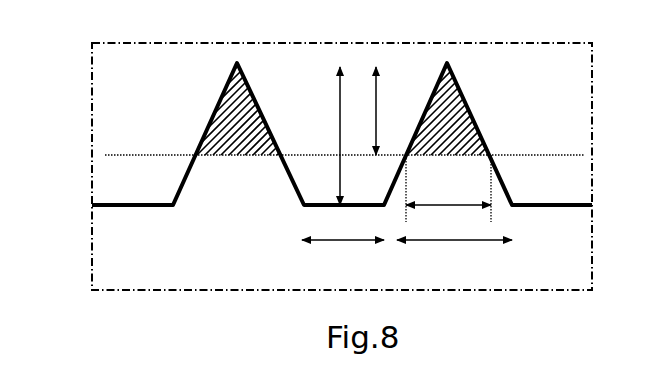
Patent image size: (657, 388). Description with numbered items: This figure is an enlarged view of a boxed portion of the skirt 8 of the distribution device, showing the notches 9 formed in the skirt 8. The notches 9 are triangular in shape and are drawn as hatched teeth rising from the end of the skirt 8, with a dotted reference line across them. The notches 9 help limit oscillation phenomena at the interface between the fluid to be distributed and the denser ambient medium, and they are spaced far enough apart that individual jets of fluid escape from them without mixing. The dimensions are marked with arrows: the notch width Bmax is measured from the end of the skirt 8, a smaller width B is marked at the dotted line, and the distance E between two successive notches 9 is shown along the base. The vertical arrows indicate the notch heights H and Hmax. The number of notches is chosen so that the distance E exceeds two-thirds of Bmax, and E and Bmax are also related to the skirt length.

The skirt 8 is at (130, 118).
The notches 9 is at (232, 181).
The maximum thread height dimension Hmax is at (306, 136).
The thread height dimension H is at (364, 111).
The tooth width dimension B is at (448, 198).
The width of the notch Bmax is at (454, 259).
The distance between two successive notches E is at (343, 259).